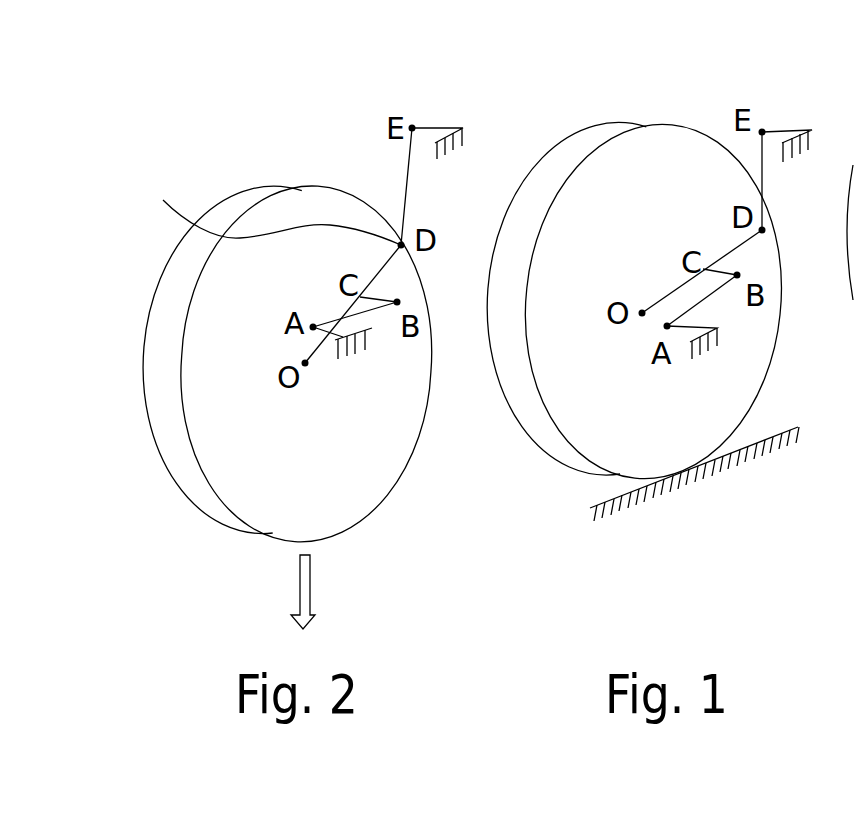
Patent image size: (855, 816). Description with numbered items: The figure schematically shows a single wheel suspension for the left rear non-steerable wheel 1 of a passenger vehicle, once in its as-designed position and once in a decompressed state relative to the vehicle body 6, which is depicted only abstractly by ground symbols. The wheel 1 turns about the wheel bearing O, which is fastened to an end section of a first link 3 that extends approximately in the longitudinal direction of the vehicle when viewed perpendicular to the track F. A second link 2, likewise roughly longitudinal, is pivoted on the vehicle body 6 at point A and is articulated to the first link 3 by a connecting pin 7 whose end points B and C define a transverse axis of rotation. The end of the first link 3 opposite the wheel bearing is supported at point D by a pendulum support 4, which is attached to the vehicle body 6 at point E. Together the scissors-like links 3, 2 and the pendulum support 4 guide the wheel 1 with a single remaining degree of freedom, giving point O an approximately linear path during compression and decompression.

In FIG. 2, the wheel 1 is at (212, 485).
In FIG. 1, the wheel 1 is at (567, 447).
In FIG. 2, the second link 2 is at (368, 316).
In FIG. 1, the second link 2 is at (706, 299).
In FIG. 2, the first link 3 is at (275, 265).
In FIG. 1, the first link 3 is at (665, 297).
In FIG. 2, the pendulum support 4 is at (403, 193).
In FIG. 1, the pendulum support 4 is at (766, 173).
In FIG. 2, the vehicle body 6 is at (452, 128).
In FIG. 1, the vehicle body 6 is at (793, 140).
In FIG. 2, the connecting pin 7 is at (367, 297).
In FIG. 1, the connecting pin 7 is at (720, 270).
In FIG. 1, the track F is at (690, 487).